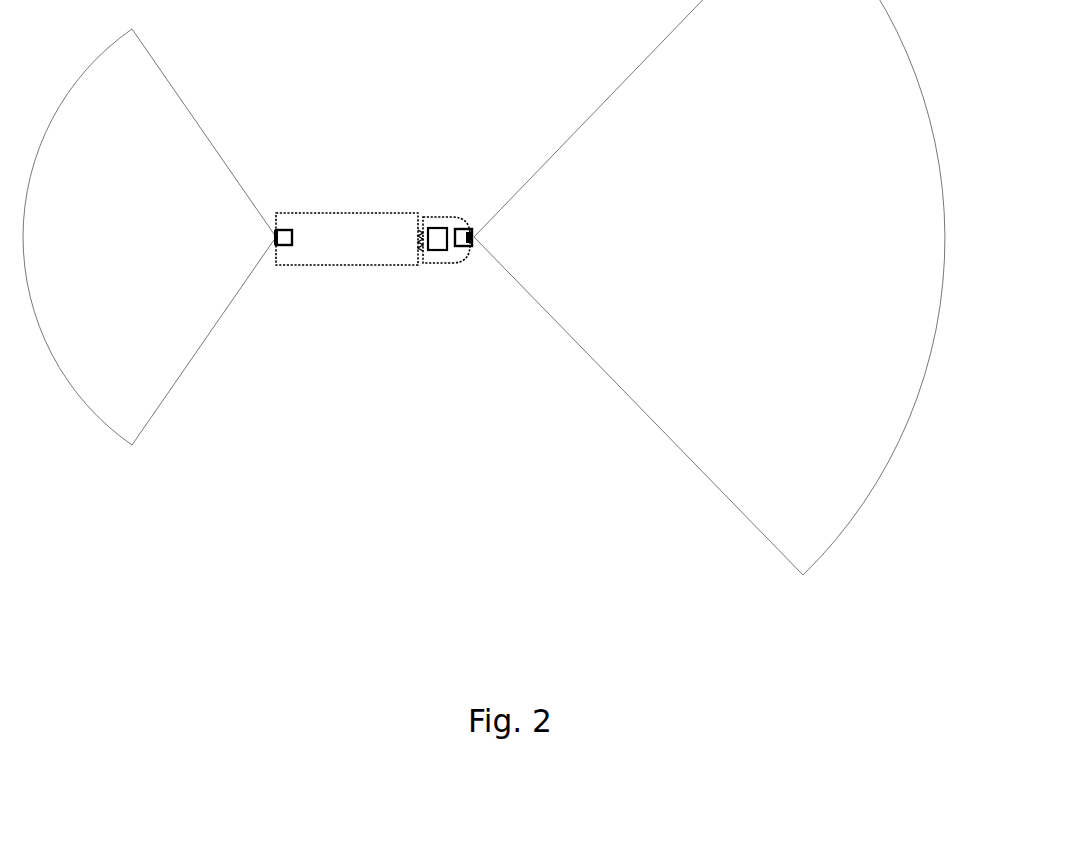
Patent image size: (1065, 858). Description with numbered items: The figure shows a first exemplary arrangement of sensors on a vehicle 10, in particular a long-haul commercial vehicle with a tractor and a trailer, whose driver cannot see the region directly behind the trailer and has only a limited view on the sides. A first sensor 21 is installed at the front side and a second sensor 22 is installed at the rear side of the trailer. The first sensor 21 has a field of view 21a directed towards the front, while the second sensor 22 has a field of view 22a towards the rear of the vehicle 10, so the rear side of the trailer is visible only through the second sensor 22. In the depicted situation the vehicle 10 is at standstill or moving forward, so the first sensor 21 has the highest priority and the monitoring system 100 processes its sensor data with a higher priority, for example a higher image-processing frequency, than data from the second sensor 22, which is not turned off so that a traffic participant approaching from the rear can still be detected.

The vehicle 10 is at (382, 213).
The monitoring system 100 is at (437, 250).
The first sensor 21 is at (471, 234).
The second sensor 22 is at (279, 244).
The field of view of the first sensor 21a is at (608, 99).
The field of view of the second sensor 22a is at (197, 358).